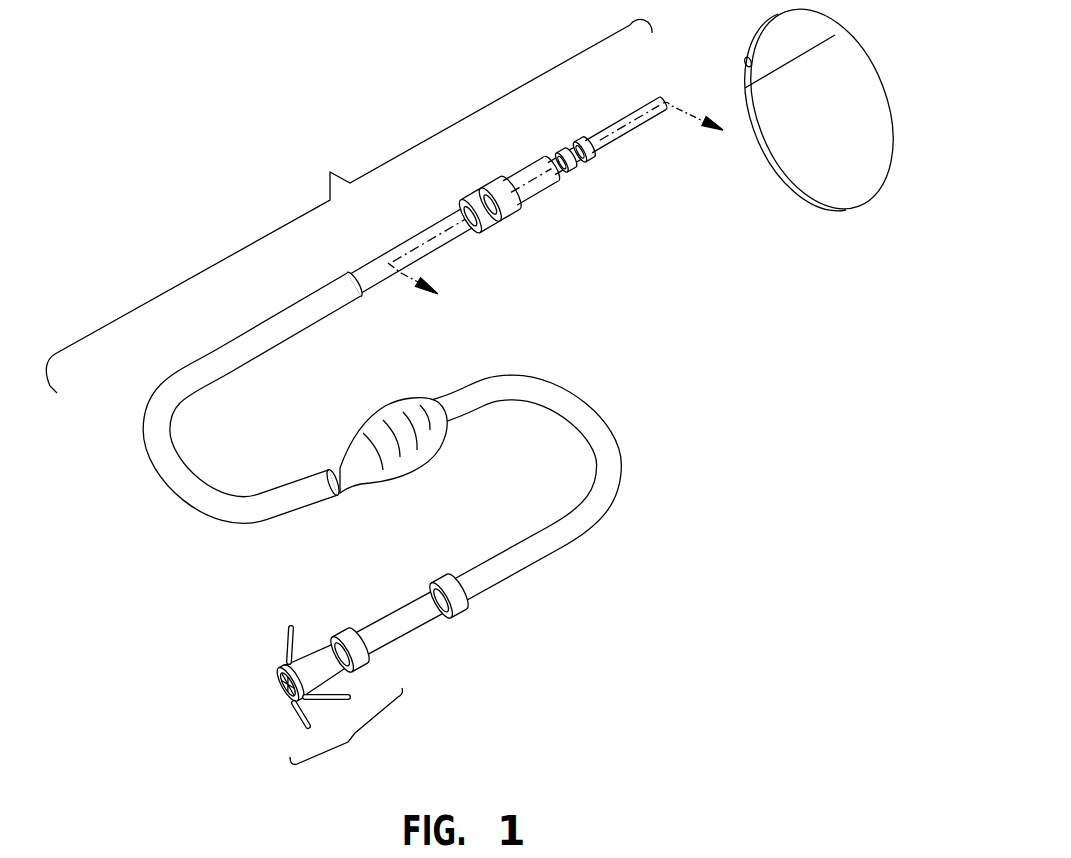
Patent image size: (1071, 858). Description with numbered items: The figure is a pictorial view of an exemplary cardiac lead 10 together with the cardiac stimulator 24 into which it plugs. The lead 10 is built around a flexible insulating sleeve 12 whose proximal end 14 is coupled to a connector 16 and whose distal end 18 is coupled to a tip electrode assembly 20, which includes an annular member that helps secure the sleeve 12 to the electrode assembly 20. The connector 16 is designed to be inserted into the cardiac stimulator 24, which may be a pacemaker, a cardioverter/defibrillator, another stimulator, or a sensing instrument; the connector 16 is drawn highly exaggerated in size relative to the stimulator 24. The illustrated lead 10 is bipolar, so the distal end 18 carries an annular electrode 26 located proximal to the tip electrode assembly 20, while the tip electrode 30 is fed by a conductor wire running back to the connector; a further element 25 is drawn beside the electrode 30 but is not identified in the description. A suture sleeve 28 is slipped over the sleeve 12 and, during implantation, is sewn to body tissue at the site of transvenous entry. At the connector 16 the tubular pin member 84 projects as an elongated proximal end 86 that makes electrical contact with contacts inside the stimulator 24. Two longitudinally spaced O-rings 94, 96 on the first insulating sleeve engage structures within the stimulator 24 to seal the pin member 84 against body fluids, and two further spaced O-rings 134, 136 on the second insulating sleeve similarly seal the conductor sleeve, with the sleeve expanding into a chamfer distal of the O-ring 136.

The cardiac lead 10 is at (330, 172).
The flexible insulating sleeve 12 is at (167, 497).
The proximal end 14 is at (280, 345).
The connector 16 is at (455, 243).
The distal end 18 is at (417, 633).
The tip electrode assembly 20 is at (356, 737).
The cardiac stimulator 24 is at (760, 30).
The connector fitting 25 is at (338, 632).
The electrode 26 is at (443, 576).
The suture sleeve 28 is at (395, 400).
The electrode 30 is at (272, 678).
The tubular pin member 84 is at (623, 117).
The elongated proximal end 86 is at (661, 100).
The O-ring 94 is at (593, 163).
The O-ring 96 is at (563, 173).
The O-ring 134 is at (487, 183).
The O-ring 136 is at (467, 195).